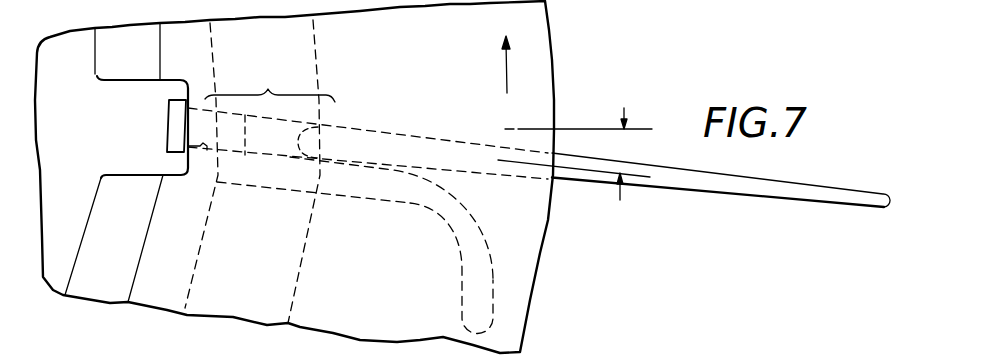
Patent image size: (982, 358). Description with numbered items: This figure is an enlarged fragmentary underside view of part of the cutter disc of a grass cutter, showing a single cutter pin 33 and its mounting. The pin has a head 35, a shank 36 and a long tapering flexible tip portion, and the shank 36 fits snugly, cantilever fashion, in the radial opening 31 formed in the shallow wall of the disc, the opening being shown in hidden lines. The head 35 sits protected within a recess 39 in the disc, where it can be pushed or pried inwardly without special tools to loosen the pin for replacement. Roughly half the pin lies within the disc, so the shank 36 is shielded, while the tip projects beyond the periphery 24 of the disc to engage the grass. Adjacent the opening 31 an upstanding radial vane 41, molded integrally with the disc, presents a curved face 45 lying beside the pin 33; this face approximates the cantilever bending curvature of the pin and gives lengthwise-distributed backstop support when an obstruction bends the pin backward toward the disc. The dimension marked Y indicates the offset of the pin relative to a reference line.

The periphery 24 is at (552, 52).
The radial opening 31 is at (194, 152).
The cutter pin 33 is at (659, 199).
The head 35 is at (174, 133).
The shank 36 is at (368, 121).
The recess 39 is at (123, 83).
The radial vane 41 is at (412, 207).
The curved face 45 is at (487, 257).